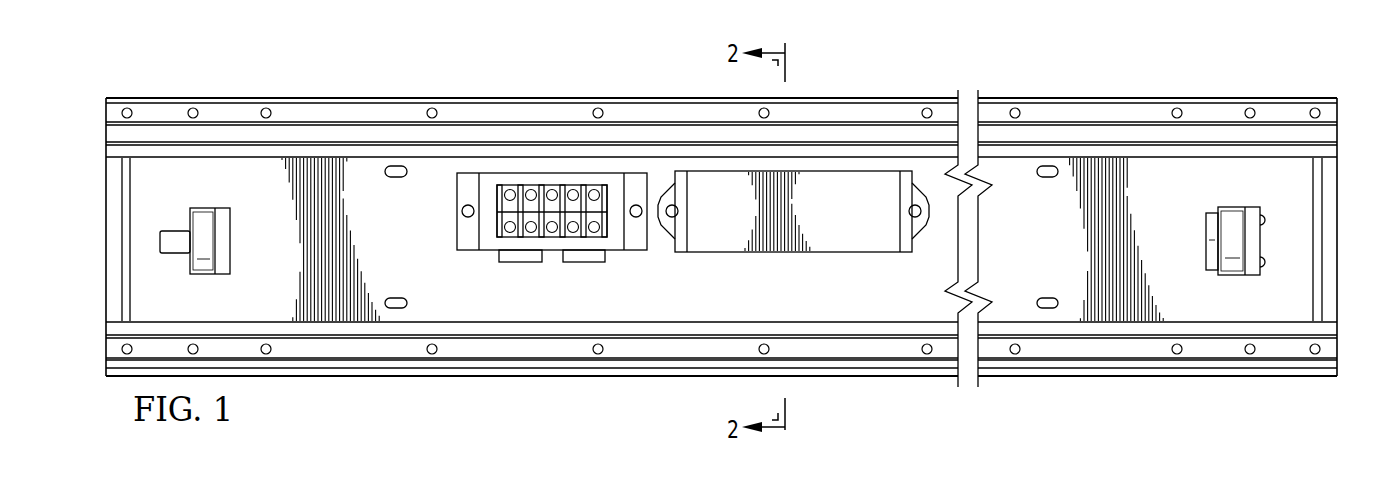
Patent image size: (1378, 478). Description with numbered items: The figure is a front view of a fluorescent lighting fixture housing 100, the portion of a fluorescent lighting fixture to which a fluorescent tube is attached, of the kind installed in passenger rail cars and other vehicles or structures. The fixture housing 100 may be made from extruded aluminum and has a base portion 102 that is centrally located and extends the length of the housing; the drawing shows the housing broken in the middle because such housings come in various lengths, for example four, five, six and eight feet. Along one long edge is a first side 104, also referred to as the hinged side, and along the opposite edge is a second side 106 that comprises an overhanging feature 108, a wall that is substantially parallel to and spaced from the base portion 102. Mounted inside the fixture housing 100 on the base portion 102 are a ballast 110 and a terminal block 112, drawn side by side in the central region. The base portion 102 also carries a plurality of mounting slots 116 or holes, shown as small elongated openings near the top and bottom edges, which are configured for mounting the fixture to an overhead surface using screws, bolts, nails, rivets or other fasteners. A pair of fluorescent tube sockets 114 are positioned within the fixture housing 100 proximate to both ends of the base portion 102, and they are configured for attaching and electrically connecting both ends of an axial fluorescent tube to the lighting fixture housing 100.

The fluorescent lighting fixture housing 100 is at (416, 74).
The base portion 102 is at (542, 302).
The first side 104 is at (347, 328).
The second side 106 is at (527, 122).
The overhanging feature 108 is at (1207, 133).
The ballast 110 is at (728, 253).
The terminal block 112 is at (490, 252).
The fluorescent tube sockets 114 is at (232, 243).
The mounting slots 116 is at (390, 298).